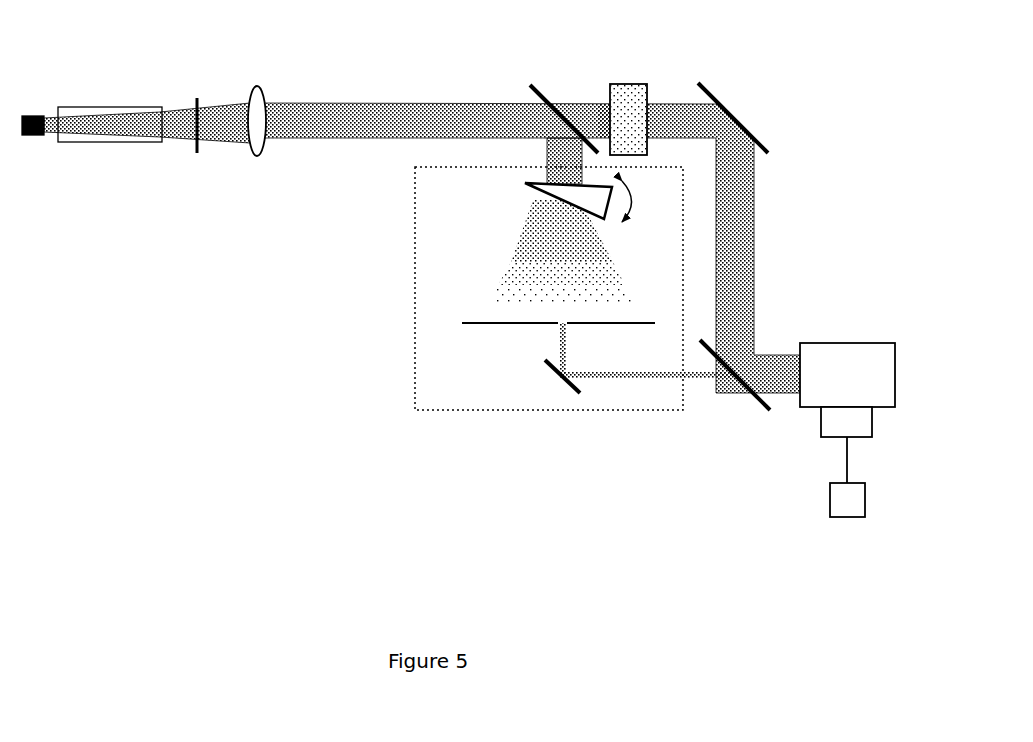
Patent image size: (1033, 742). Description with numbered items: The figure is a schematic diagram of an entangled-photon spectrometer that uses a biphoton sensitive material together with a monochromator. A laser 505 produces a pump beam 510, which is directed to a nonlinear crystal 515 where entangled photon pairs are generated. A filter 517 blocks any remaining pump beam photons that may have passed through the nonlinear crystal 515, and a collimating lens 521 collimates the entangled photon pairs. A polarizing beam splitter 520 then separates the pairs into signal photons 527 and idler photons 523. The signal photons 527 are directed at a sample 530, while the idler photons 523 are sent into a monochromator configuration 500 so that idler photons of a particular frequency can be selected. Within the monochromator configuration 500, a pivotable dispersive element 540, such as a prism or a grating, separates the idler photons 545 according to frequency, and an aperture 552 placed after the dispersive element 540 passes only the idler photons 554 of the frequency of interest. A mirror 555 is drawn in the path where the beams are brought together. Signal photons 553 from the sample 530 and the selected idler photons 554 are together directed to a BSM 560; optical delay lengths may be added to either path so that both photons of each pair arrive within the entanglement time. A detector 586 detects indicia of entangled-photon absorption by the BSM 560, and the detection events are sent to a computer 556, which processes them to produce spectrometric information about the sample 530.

The monochromator configuration 500 is at (453, 400).
The laser 505 is at (33, 111).
The pump beam 510 is at (52, 141).
The nonlinear crystal 515 is at (102, 106).
The filter 517 is at (203, 88).
The polarizing beam splitter 520 is at (537, 83).
The collimating lens 521 is at (251, 173).
The idler photons 523 is at (546, 144).
The signal photons 527 is at (588, 101).
The sample 530 is at (641, 83).
The pivotable dispersive element 540 is at (521, 203).
The idler photons 545 is at (500, 268).
The aperture 552 is at (462, 328).
The signal photons 553 is at (760, 199).
The idler photons 554 is at (623, 387).
The mirror 555 is at (745, 406).
The computer 556 is at (822, 521).
The BSM 560 is at (846, 334).
The detector 586 is at (818, 442).